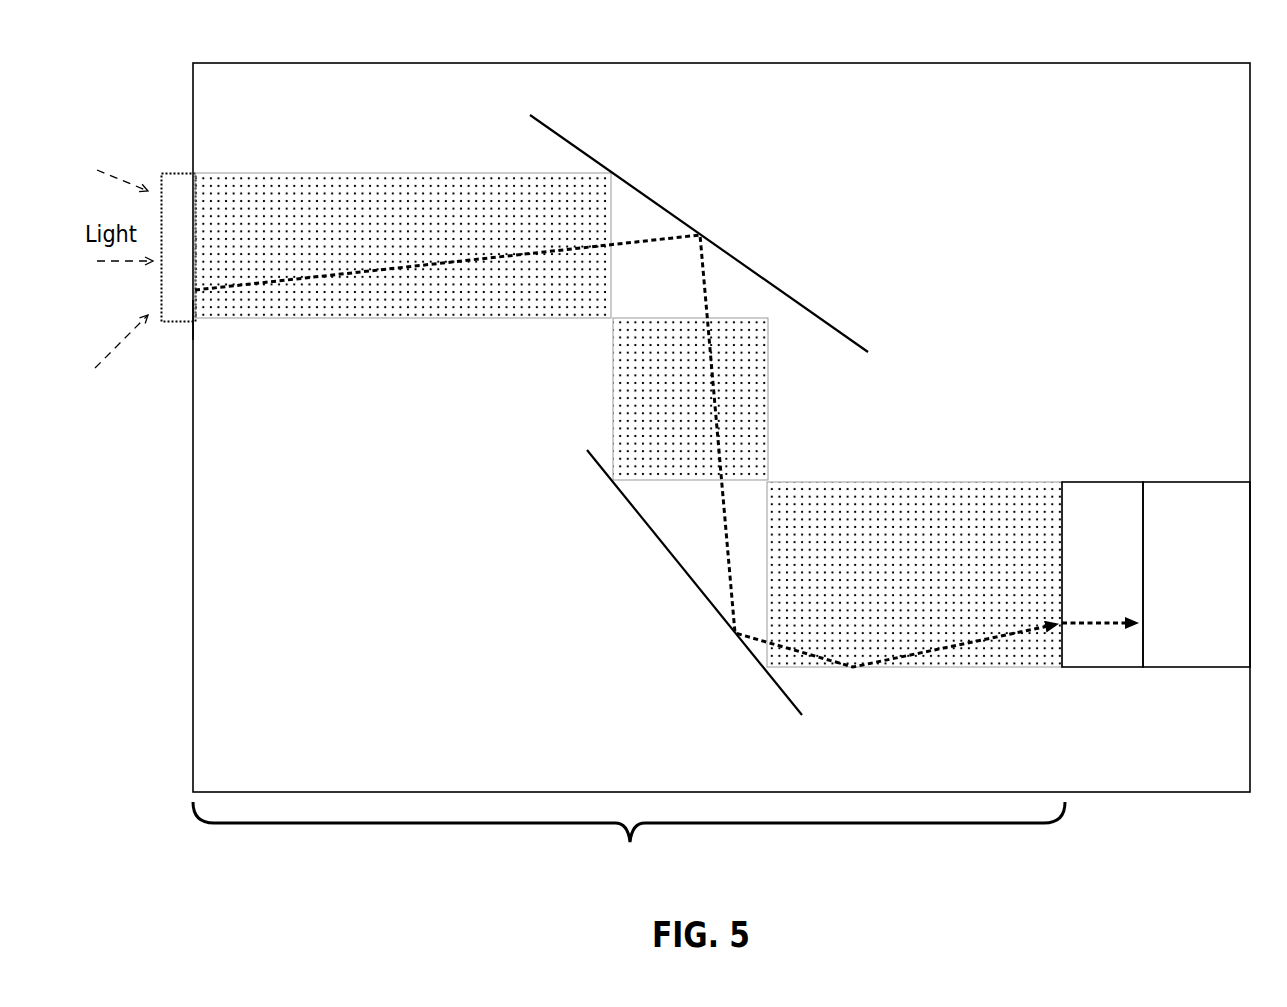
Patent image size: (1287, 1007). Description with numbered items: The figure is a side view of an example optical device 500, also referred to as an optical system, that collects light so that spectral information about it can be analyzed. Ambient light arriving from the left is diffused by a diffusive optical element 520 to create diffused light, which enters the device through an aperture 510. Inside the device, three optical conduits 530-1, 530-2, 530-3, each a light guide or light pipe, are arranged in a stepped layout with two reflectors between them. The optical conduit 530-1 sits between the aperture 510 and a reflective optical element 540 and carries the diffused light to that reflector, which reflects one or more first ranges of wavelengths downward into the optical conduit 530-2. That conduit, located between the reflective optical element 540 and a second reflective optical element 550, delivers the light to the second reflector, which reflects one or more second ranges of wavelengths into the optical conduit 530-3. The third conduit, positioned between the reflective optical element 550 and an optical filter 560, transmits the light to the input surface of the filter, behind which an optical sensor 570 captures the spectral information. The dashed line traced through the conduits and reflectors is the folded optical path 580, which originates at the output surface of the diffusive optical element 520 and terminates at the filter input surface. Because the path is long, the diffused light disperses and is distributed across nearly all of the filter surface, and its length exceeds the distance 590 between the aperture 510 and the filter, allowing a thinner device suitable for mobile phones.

The optical device 500 is at (238, 54).
The aperture 510 is at (199, 326).
The diffusive optical element 520 is at (178, 306).
The optical conduit 530-1 is at (331, 220).
The optical conduit 530-2 is at (663, 367).
The optical conduit 530-3 is at (908, 546).
The reflective optical element 540 is at (674, 211).
The reflective optical element 550 is at (638, 520).
The optical filter 560 is at (1093, 506).
The optical sensor 570 is at (1184, 511).
The folded optical path 580 is at (966, 646).
The distance 590 is at (629, 838).